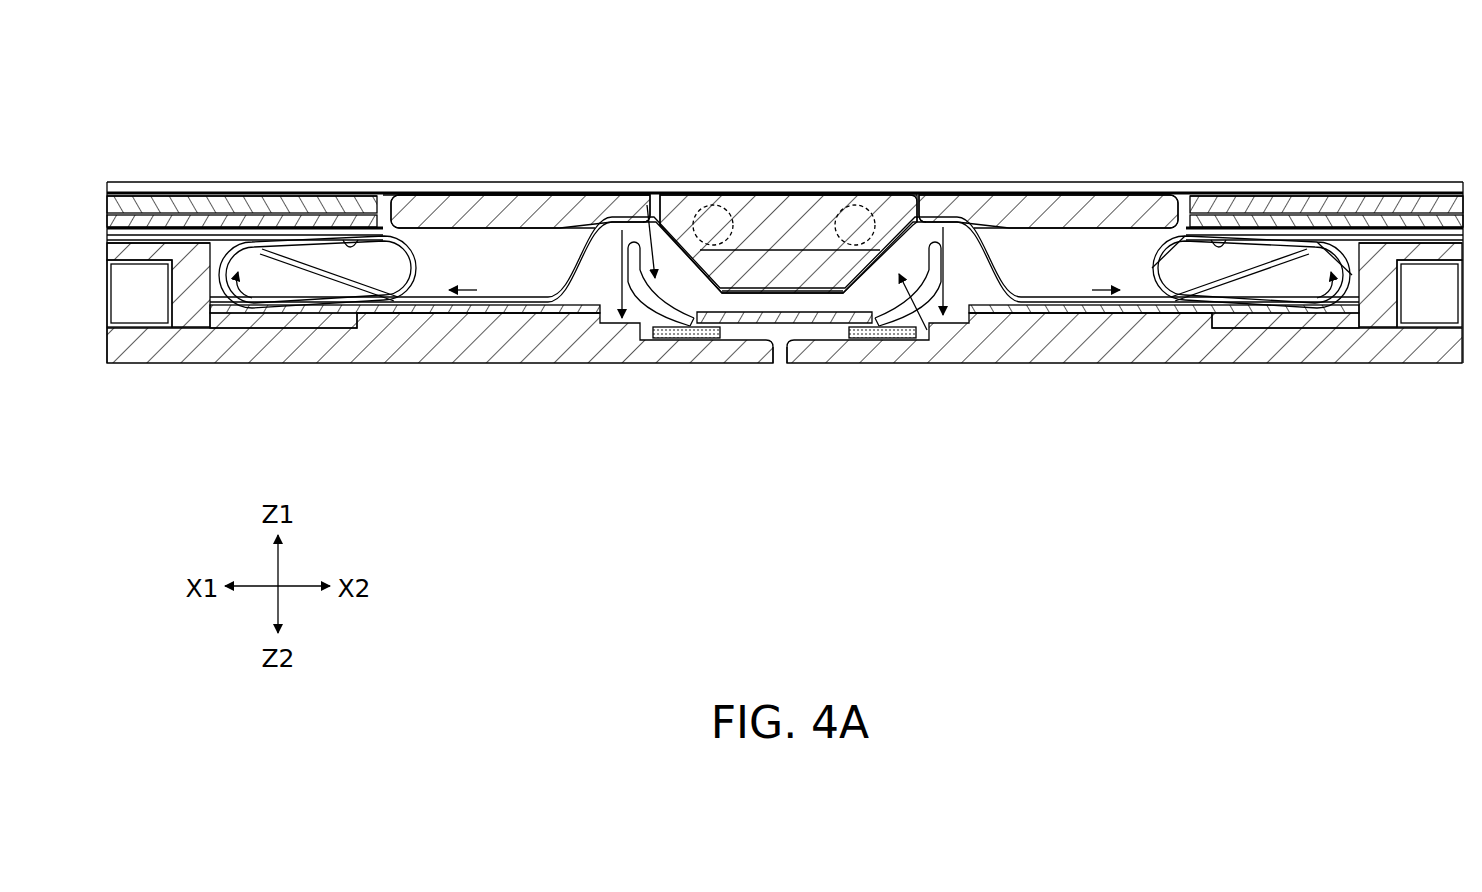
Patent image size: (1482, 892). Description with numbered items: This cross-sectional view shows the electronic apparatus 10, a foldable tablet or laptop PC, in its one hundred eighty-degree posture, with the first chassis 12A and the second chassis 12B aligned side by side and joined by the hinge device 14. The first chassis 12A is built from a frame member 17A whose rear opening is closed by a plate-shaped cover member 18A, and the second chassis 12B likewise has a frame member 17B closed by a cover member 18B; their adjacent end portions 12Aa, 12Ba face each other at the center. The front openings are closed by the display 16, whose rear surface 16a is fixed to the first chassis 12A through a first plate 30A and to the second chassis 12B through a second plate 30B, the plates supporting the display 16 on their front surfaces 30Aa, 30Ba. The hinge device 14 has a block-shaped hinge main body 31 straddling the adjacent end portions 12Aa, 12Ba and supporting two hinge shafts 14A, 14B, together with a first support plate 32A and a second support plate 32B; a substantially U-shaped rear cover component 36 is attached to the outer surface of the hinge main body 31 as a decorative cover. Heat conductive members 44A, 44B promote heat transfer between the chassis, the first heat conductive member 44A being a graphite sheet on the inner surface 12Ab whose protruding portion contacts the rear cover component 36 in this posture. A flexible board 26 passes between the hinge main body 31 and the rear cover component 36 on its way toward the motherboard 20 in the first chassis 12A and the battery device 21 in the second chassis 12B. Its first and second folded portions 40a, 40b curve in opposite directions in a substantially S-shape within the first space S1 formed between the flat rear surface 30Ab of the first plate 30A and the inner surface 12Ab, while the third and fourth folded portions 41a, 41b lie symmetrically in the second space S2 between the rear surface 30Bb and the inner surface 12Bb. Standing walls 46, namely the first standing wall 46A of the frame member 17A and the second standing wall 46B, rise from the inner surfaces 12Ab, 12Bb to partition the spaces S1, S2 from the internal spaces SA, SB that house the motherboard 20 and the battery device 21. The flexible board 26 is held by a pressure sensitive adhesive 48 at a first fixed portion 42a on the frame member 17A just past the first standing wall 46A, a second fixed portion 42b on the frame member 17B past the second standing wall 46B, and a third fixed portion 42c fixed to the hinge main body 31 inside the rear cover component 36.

The electronic apparatus 10 is at (152, 62).
The first chassis 12A is at (440, 398).
The adjacent end portion 12Aa is at (817, 430).
The inner surface 12Ab is at (478, 382).
The second chassis 12B is at (1124, 399).
The adjacent end portion 12Ba is at (752, 430).
The inner surface 12Bb is at (1090, 397).
The hinge device 14 is at (842, 374).
The hinge shaft 14A is at (712, 157).
The hinge shaft 14B is at (843, 166).
The display 16 is at (785, 151).
The rear surface 16a is at (557, 196).
The frame member 17A is at (495, 352).
The frame member 17B is at (1053, 352).
The cover member 18A is at (332, 353).
The cover member 18B is at (1294, 380).
The motherboard 20 is at (140, 347).
The battery device 21 is at (1429, 354).
The flexible board 26 is at (898, 181).
The first plate 30A is at (245, 173).
The front surface 30Aa is at (300, 195).
The rear surface 30Ab is at (353, 155).
The second plate 30B is at (1324, 174).
The front surface 30Ba is at (1322, 195).
The rear surface 30Bb is at (1213, 156).
The hinge main body 31 is at (788, 160).
The first support plate 32A is at (520, 168).
The second support plate 32B is at (1048, 168).
The rear cover component 36 is at (784, 215).
The first folded portion 40a is at (322, 190).
The second folded portion 40b is at (866, 212).
The third folded portion 41a is at (1357, 173).
The fourth folded portion 41b is at (1160, 191).
The first fixed portion 42a is at (158, 187).
The second fixed portion 42b is at (1410, 176).
The third fixed portion 42c is at (784, 390).
The first heat conductive member 44A is at (497, 203).
The heat conductive member 44B is at (1071, 203).
The flow passage 46 is at (782, 217).
The first standing wall 46A is at (169, 347).
The second standing wall 46B is at (1410, 364).
The pressure sensitive adhesive 48 is at (785, 207).
The internal space SA is at (100, 450).
The internal space SB is at (1430, 484).
The first space S1 is at (288, 450).
The second space S2 is at (1265, 446).